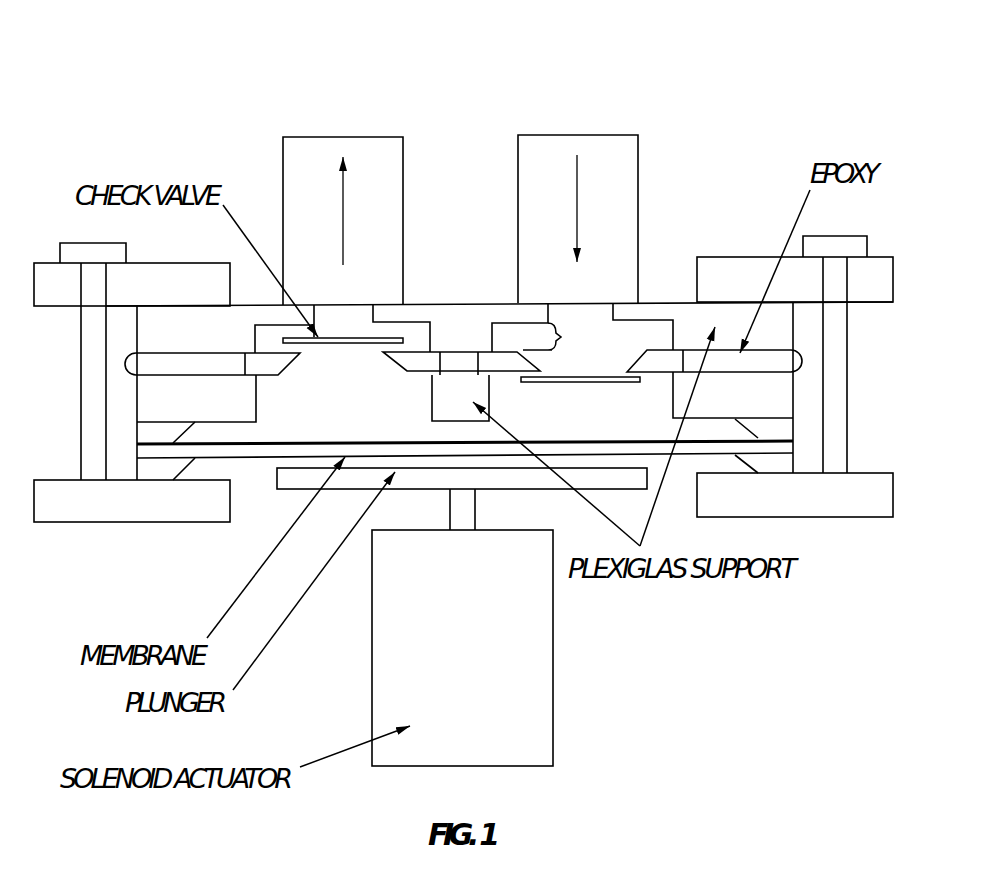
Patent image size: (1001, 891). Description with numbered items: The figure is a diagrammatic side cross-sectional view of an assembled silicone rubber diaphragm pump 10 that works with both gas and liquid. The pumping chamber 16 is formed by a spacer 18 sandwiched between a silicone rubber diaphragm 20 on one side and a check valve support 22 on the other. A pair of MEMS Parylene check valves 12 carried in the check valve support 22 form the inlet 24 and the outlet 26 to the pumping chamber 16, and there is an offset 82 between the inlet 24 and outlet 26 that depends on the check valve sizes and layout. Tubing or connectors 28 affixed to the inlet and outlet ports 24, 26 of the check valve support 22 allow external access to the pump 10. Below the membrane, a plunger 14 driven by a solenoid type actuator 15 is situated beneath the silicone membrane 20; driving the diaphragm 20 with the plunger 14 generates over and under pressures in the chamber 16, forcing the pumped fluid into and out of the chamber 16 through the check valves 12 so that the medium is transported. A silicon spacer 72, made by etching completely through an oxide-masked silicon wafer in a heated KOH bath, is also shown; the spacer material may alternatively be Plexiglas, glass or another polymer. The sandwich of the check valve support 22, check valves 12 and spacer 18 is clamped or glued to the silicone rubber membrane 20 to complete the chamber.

The diaphragm pump 10 is at (732, 68).
The check valve 12 is at (228, 363).
The plunger 14 is at (535, 478).
The solenoid type actuator 15 is at (532, 708).
The pumping chamber 16 is at (360, 423).
The spacer 18 is at (777, 398).
The silicone rubber diaphragm 20 is at (680, 453).
The check valve support 22 is at (717, 318).
The inlet 24 is at (612, 312).
The outlet 26 is at (373, 312).
The tubing or connectors 28 is at (347, 145).
The silicon spacer 72 is at (147, 432).
The offset 82 is at (562, 340).